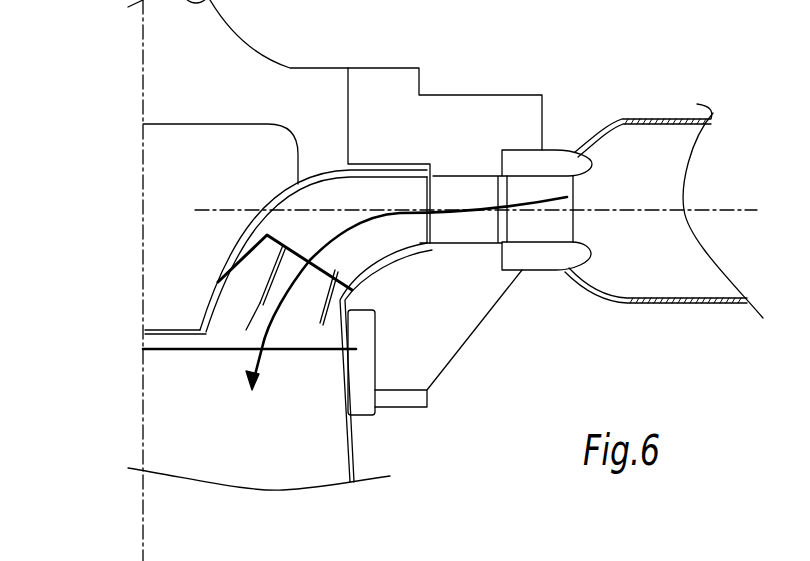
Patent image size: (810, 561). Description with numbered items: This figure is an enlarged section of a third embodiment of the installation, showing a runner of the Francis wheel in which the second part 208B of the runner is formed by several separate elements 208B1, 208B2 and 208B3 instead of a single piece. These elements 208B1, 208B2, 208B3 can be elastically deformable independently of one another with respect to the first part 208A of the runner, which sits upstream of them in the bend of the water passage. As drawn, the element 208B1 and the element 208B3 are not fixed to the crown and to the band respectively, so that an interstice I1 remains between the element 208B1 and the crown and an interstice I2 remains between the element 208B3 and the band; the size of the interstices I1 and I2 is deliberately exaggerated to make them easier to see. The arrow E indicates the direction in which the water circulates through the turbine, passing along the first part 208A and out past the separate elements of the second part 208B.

The first part 208A is at (382, 195).
The second part 208B is at (82, 302).
The element 208B1 is at (255, 280).
The element 208B2 is at (310, 312).
The element 208B3 is at (320, 325).
The interstice I1 is at (333, 350).
The interstice I2 is at (217, 281).
The arrows E is at (401, 300).